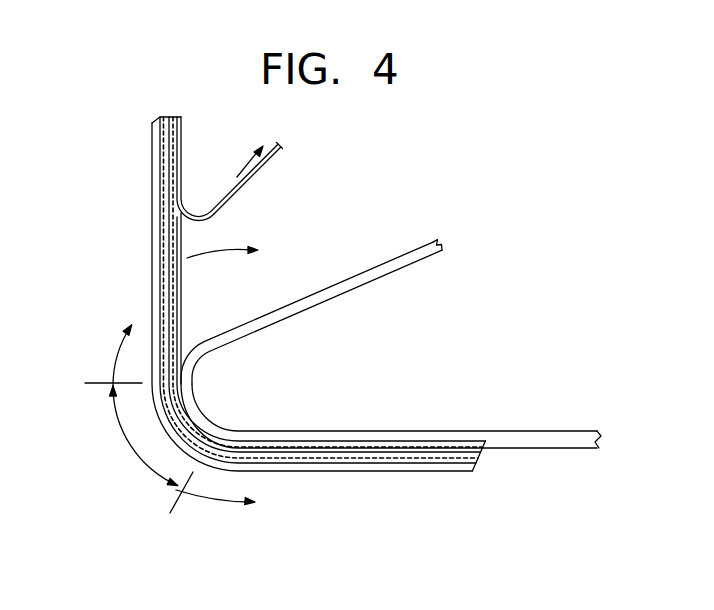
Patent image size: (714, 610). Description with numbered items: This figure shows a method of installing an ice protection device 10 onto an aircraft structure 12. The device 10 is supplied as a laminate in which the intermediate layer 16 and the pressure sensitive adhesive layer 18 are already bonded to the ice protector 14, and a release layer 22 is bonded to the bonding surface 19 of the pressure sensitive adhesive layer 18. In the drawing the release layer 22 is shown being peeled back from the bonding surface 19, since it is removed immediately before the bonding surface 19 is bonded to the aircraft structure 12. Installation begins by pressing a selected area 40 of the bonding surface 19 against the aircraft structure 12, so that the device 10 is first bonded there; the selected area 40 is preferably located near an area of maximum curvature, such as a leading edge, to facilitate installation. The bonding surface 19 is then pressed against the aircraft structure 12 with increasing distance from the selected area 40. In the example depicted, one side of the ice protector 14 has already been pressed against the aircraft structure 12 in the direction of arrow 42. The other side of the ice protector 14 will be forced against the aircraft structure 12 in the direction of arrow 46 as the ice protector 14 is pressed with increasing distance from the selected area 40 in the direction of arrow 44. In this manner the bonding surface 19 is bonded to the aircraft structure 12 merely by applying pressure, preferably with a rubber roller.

The device 10 is at (332, 294).
The aircraft structure 12 is at (375, 272).
The ice protector 14 is at (146, 170).
The intermediate layer 16 is at (163, 197).
The pressure sensitive adhesive layer 18 is at (178, 219).
The bonding surface 19 is at (182, 290).
The release layer 22 is at (261, 167).
The selected area 40 is at (133, 446).
The arrow 42 is at (220, 503).
The arrow 44 is at (123, 357).
The arrow 46 is at (222, 252).